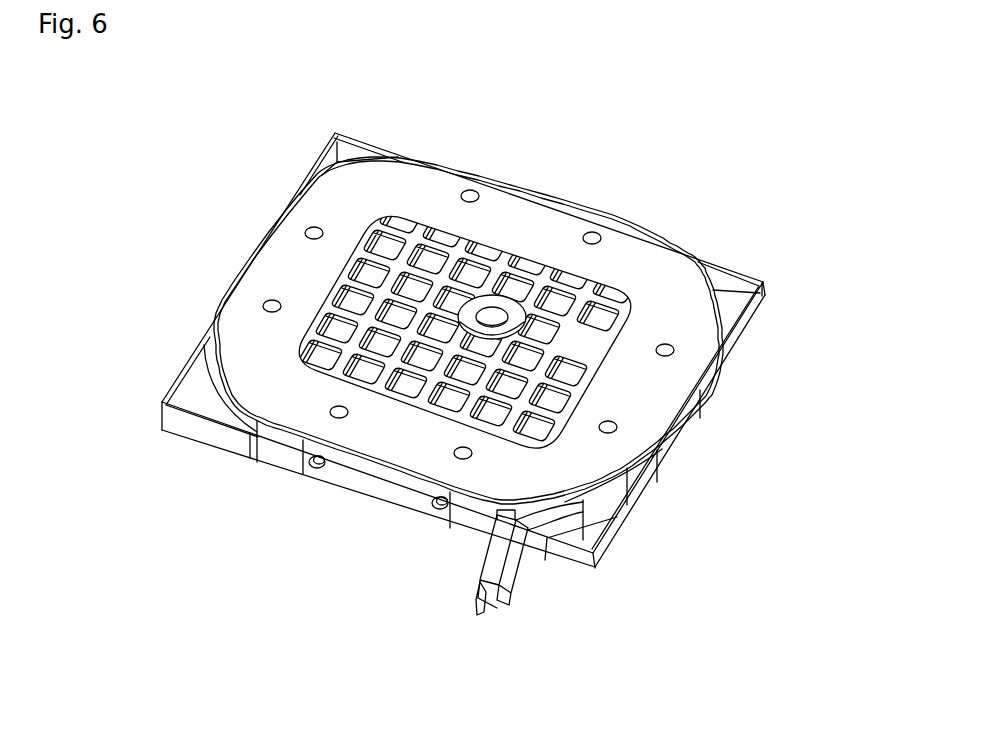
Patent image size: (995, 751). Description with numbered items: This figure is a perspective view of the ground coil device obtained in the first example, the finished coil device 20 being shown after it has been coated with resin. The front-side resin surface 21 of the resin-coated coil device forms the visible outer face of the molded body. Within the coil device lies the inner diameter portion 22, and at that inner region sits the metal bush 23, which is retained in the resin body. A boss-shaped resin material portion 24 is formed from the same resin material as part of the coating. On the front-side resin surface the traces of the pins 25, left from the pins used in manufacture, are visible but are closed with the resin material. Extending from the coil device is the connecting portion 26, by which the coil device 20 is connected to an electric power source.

The coil device 20 is at (686, 219).
The front-side resin surface 21 is at (402, 172).
The inner diameter portion 22 is at (516, 294).
The metal bush 23 is at (499, 312).
The boss-shaped resin material portion 24 is at (578, 336).
The traces of the pins 25 is at (333, 418).
The connecting portion 26 is at (476, 592).